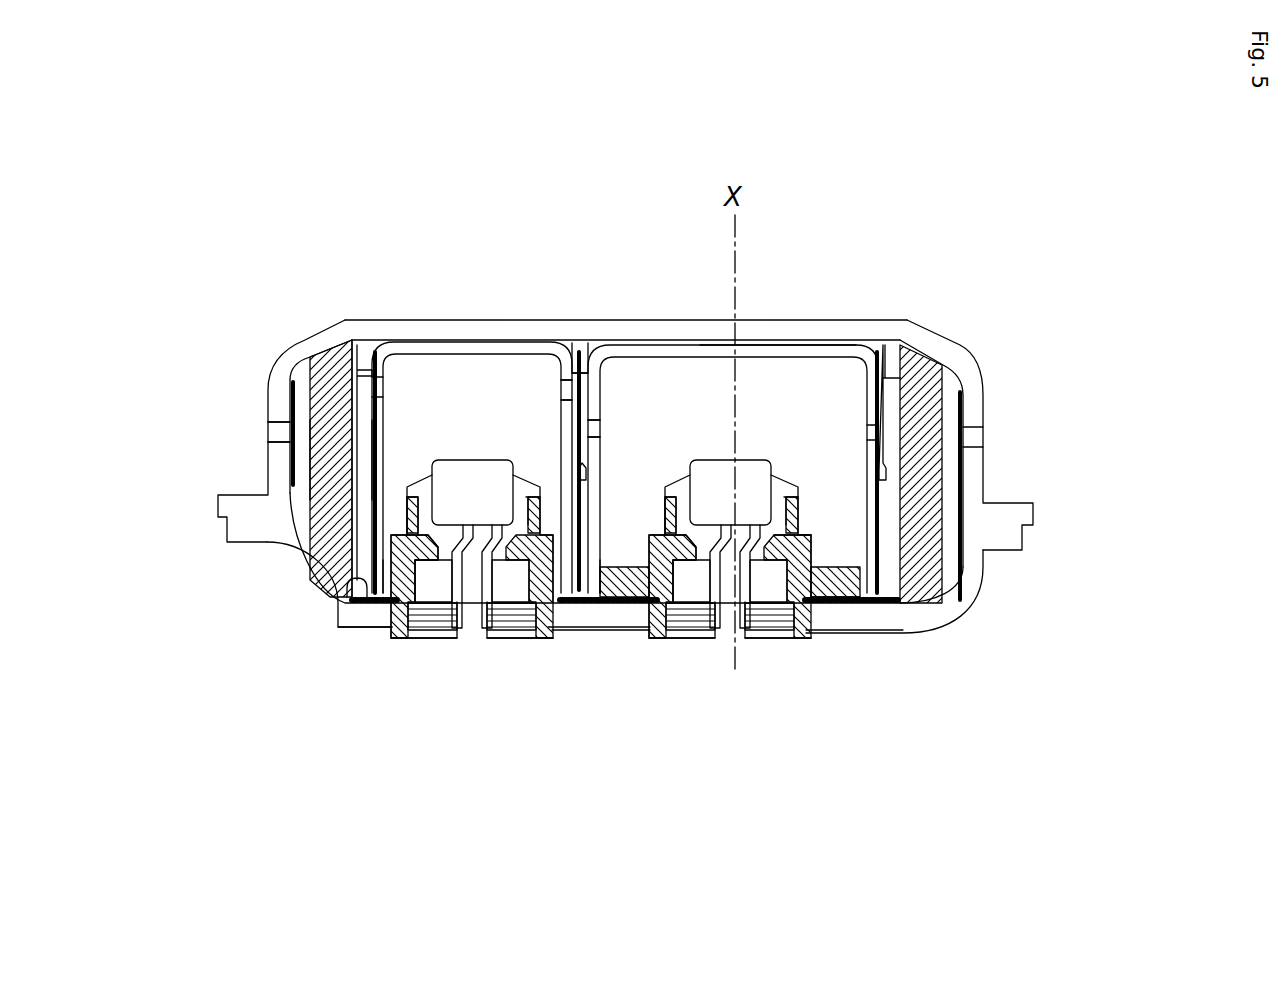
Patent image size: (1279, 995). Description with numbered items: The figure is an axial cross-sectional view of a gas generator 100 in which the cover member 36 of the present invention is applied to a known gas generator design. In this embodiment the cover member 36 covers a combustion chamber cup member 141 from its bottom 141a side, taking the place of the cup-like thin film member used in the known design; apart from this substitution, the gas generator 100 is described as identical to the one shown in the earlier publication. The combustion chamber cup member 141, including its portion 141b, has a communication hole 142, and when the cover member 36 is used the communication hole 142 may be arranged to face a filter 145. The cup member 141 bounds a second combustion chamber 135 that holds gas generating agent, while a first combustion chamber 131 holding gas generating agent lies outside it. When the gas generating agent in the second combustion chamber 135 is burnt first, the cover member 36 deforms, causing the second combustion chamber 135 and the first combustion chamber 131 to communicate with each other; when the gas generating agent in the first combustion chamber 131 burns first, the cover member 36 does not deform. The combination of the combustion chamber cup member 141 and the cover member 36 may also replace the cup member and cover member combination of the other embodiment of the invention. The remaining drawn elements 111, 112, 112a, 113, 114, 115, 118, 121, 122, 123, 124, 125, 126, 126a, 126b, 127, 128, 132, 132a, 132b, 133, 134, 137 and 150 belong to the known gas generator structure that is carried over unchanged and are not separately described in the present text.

The gas generator 100 is at (515, 283).
The housing 111 is at (1118, 470).
The upper case 112 is at (970, 479).
The lower case 113 is at (970, 573).
The partition wall 112a is at (357, 343).
The side wall 114 is at (280, 430).
The seal member 115 is at (299, 400).
The bottom wall 118 is at (340, 604).
The first sensor assembly 121 is at (457, 640).
The support block 122 is at (352, 562).
The first sensor element 123 is at (472, 492).
The first sensor body 124 is at (474, 640).
The second sensor assembly 125 is at (715, 645).
The base plate 126 is at (637, 580).
The base plate bottom portion 126a is at (848, 590).
The base plate shoulder 126b is at (808, 540).
The second sensor element 127 is at (730, 492).
The second sensor body 128 is at (738, 645).
The first combustion chamber 131 is at (362, 400).
The first shield frame 132 is at (372, 447).
The first shield frame plate 132a is at (434, 358).
The first shield frame side wall 132b is at (386, 431).
The first chamber 133 is at (424, 482).
The first frame inner wall 134 is at (560, 384).
The second combustion chamber 135 is at (665, 482).
The central partition 137 is at (583, 496).
The combustion chamber cup member 141 is at (885, 513).
The bottom 141a is at (814, 360).
The second shield frame side wall 141b is at (874, 402).
The communication hole 142 is at (603, 428).
The filter 145 is at (323, 537).
The clip 150 is at (578, 370).
The cover member 36 is at (652, 340).